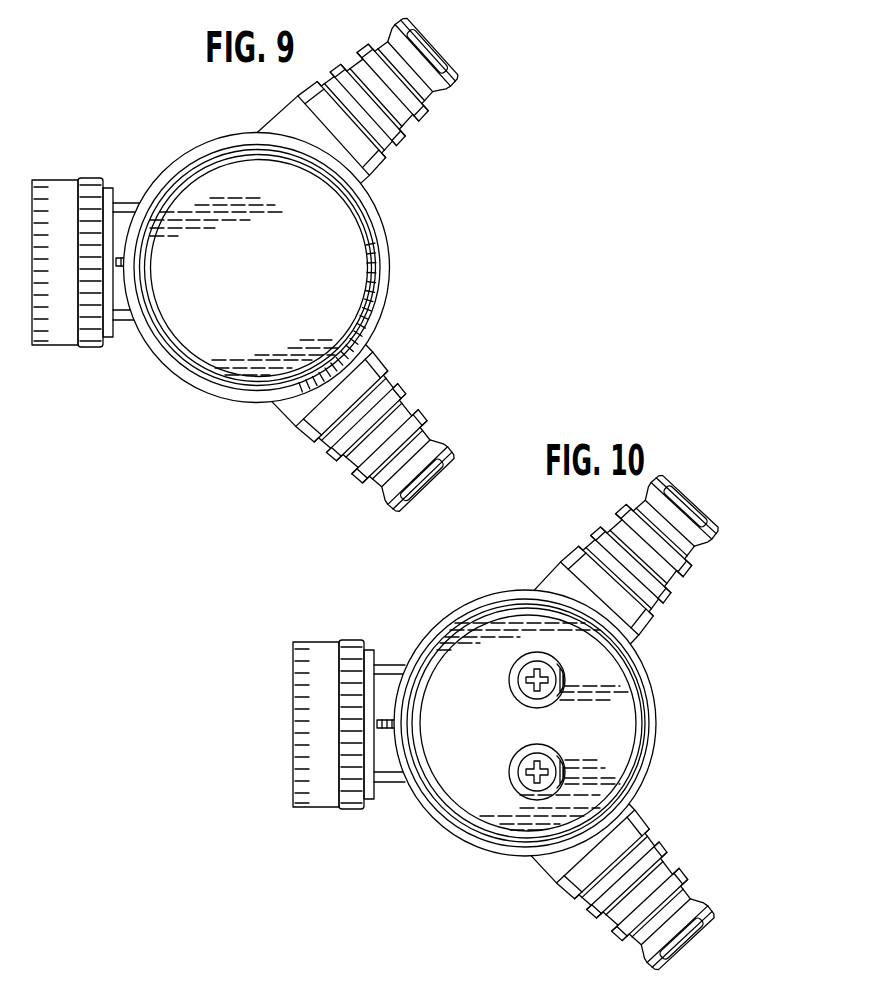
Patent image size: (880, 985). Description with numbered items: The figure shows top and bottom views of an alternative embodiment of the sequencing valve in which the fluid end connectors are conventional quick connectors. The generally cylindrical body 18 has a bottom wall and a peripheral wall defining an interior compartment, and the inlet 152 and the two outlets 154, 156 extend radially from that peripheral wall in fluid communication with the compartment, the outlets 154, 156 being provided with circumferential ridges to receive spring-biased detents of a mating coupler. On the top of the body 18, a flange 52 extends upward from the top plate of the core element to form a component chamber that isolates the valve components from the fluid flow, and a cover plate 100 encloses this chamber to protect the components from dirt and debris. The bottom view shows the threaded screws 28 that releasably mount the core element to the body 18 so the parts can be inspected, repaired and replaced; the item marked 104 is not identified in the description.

In FIG. 9, the body 18 is at (197, 147).
In FIG. 10, the body 18 is at (447, 618).
In FIG. 10, the threaded screws 28 is at (565, 760).
In FIG. 9, the flange 52 is at (249, 145).
In FIG. 9, the cover plate 100 is at (350, 253).
In FIG. 9, the seal ring 104 is at (373, 275).
In FIG. 9, the inlet 152 is at (125, 325).
In FIG. 10, the inlet 152 is at (387, 787).
In FIG. 9, the outlet 154 is at (377, 355).
In FIG. 10, the outlet 154 is at (647, 620).
In FIG. 9, the outlet 156 is at (393, 147).
In FIG. 10, the outlet 156 is at (640, 823).